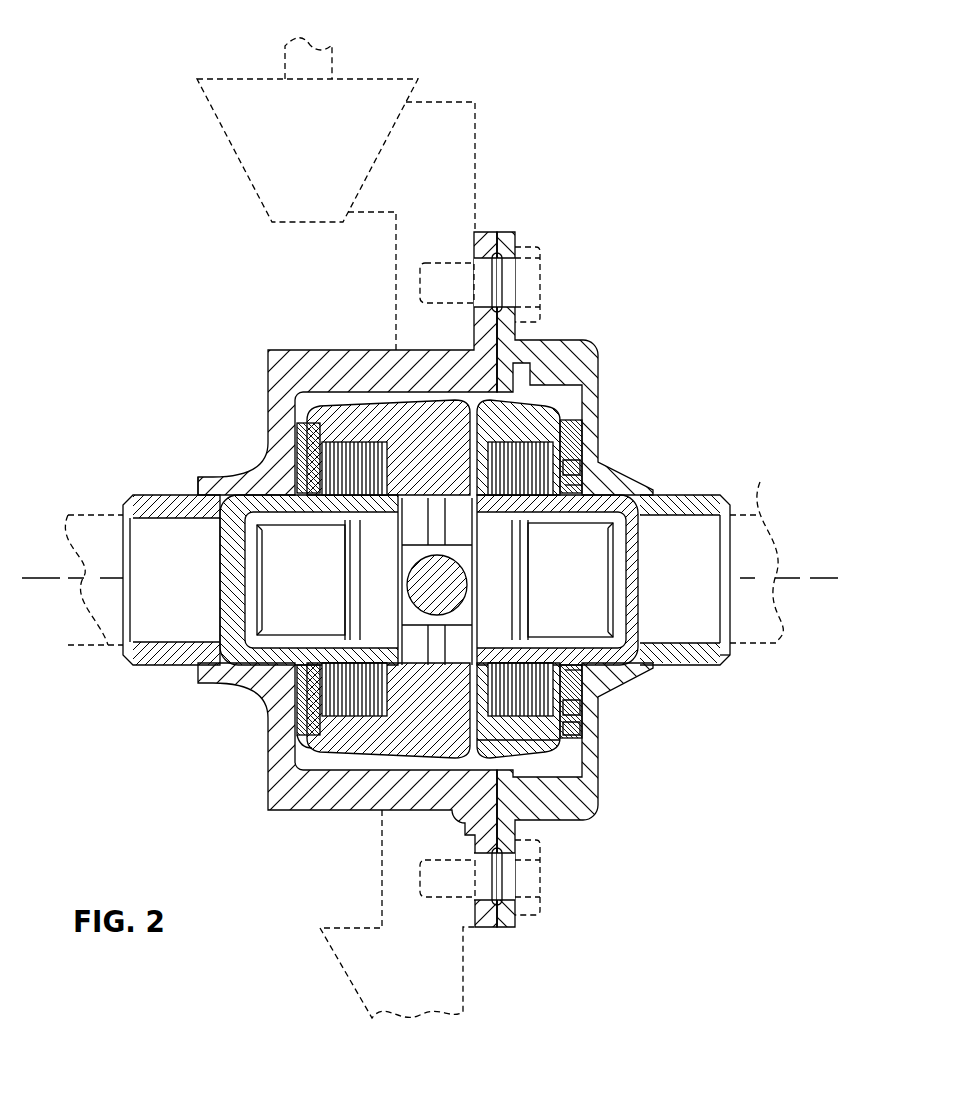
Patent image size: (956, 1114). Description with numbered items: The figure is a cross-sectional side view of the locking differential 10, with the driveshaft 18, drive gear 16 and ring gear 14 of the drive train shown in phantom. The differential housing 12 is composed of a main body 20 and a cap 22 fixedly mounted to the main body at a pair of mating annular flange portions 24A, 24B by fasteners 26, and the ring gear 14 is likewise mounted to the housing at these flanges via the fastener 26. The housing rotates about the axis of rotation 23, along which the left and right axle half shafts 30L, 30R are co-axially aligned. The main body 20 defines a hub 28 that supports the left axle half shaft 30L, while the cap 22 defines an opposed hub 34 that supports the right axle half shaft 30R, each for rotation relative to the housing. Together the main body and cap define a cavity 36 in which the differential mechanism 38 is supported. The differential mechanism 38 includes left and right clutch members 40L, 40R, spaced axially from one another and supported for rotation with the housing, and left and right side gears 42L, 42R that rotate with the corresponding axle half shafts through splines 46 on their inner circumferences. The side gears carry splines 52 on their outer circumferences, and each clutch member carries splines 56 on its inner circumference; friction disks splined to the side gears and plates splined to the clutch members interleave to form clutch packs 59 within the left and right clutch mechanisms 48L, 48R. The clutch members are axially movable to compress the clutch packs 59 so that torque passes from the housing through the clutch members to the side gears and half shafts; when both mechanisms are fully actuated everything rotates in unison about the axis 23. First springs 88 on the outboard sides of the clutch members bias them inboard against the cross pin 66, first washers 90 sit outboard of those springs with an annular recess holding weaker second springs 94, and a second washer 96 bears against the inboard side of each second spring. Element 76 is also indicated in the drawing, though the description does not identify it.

The differential 10 is at (622, 256).
The differential housing 12 is at (425, 579).
The ring gear 14 is at (462, 136).
The drive gear 16 is at (240, 142).
The driveshaft 18 is at (325, 66).
The main body 20 is at (265, 372).
The cap 22 is at (592, 366).
The axis of rotation 23 is at (790, 578).
The annular flange portion 24A is at (474, 250).
The annular flange portion 24B is at (513, 242).
The fastener 26 is at (540, 270).
The hub 28 is at (205, 480).
The left axle half shaft 30L is at (108, 648).
The right axle half shaft 30R is at (762, 500).
The opposed hub 34 is at (715, 665).
The cavity 36 is at (308, 748).
The differential mechanism 38 is at (587, 440).
The left clutch member 40L is at (370, 415).
The right clutch member 40R is at (543, 422).
The left side gear 42L is at (287, 497).
The right side gear 42R is at (600, 513).
The splines 46 is at (267, 637).
The left clutch mechanism 48L is at (340, 437).
The right clutch mechanism 48R is at (541, 677).
The splines 52 is at (373, 685).
The splines 56 is at (508, 722).
The clutch pack 59 is at (600, 688).
The cross pin 66 is at (430, 587).
The thrust washer 76 is at (593, 492).
The first spring 88 is at (570, 430).
The first washer 90 is at (595, 702).
The second spring 94 is at (578, 468).
The second washer 96 is at (585, 712).